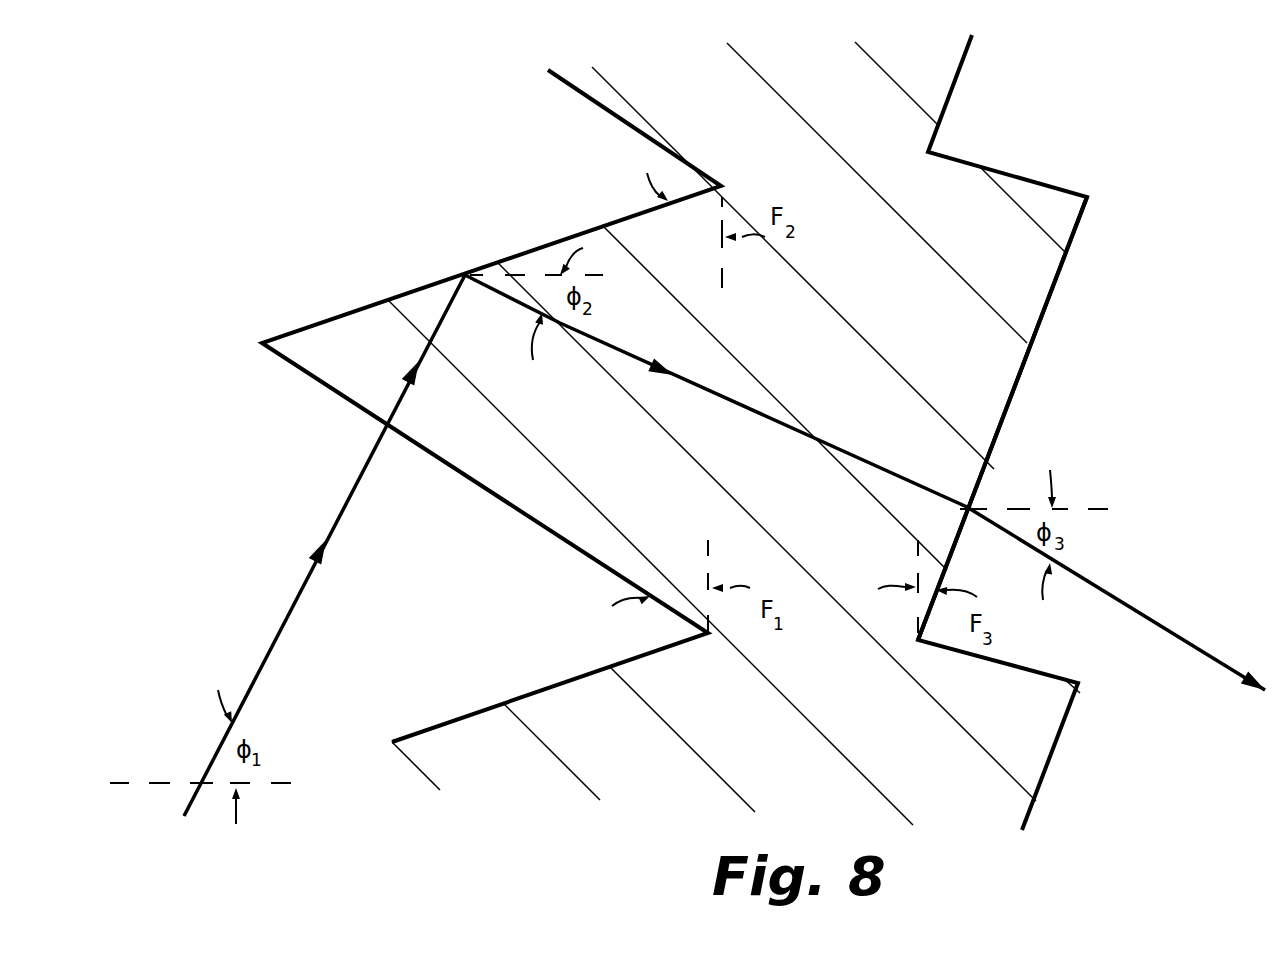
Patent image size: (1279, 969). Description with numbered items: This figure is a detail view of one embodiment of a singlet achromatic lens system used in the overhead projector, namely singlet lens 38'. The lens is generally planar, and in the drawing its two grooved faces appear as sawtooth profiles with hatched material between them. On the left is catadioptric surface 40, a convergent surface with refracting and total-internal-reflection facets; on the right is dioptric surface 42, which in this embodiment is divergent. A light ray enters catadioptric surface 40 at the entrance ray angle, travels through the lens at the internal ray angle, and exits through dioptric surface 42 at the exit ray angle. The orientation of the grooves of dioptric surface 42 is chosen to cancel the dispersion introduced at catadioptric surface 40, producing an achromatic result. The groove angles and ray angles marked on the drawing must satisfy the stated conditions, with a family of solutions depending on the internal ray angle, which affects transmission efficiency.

The catadioptric surface 40 is at (340, 308).
The singlet lens 38' is at (1006, 432).
The dioptric surface 42 is at (1068, 283).